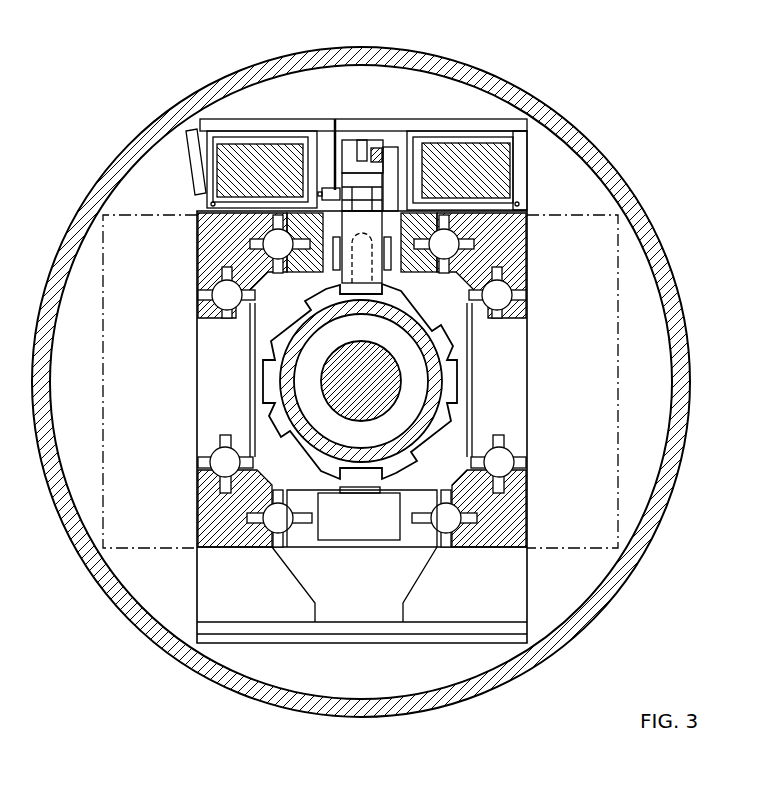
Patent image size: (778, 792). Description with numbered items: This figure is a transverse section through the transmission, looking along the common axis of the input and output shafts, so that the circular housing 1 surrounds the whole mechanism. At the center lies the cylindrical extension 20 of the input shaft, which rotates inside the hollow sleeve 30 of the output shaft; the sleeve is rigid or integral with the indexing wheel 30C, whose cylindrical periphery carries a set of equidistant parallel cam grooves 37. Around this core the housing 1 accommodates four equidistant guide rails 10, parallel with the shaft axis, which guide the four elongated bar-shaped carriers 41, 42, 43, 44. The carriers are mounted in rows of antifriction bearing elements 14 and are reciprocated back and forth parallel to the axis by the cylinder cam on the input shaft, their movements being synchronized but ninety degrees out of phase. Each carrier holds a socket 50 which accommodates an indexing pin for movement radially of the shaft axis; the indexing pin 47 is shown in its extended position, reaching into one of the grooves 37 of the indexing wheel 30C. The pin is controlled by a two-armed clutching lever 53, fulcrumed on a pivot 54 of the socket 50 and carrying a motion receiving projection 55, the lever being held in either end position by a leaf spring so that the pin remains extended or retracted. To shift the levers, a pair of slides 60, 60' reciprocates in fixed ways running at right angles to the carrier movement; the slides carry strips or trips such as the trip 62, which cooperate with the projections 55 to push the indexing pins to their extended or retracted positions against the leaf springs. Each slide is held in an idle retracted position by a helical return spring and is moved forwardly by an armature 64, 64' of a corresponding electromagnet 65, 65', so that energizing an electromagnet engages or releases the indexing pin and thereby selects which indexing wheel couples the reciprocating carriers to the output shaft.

The housing 1 is at (262, 694).
The guide rails 10 is at (222, 258).
The antifriction bearing elements 14 is at (200, 306).
The cylindrical extension 20 is at (365, 403).
The sleeve 30 is at (418, 435).
The indexing wheel 30C is at (270, 348).
The cam grooves 37 is at (300, 457).
The carrier 41 is at (300, 280).
The carrier 42 is at (515, 382).
The carrier 43 is at (309, 533).
The carrier 44 is at (217, 380).
The indexing pin 47 is at (362, 247).
The socket 50 is at (368, 528).
The clutching lever 53 is at (392, 160).
The pivot 54 is at (335, 187).
The motion receiving projection 55 is at (377, 158).
The slide 60 is at (363, 149).
The slide 60' is at (467, 150).
The trip 62 is at (362, 150).
The armature 64 is at (180, 162).
The armature 64' is at (540, 170).
The electromagnet 65 is at (229, 172).
The electromagnet 65' is at (495, 171).